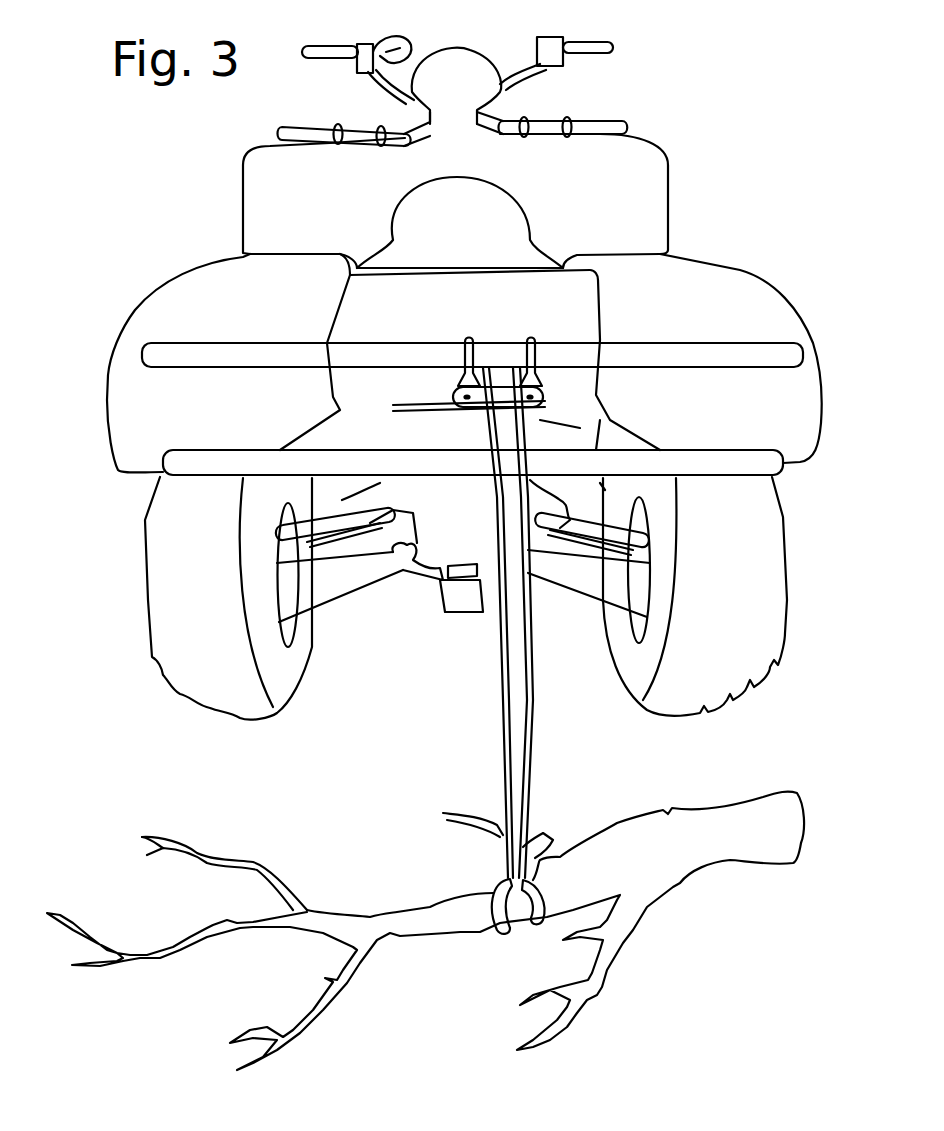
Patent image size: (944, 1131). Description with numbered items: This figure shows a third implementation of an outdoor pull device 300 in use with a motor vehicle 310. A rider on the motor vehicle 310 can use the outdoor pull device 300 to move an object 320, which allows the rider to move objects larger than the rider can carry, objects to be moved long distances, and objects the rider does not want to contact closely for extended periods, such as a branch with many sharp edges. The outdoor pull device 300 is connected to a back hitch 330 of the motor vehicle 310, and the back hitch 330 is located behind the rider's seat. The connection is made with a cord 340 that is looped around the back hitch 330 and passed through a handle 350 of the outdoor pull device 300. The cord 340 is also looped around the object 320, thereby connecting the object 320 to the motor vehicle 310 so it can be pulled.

The outdoor pull device 300 is at (449, 357).
The motor vehicle 310 is at (616, 210).
The object 320 is at (664, 900).
The back hitch 330 is at (797, 351).
The cord 340 is at (540, 351).
The handle 350 is at (550, 395).